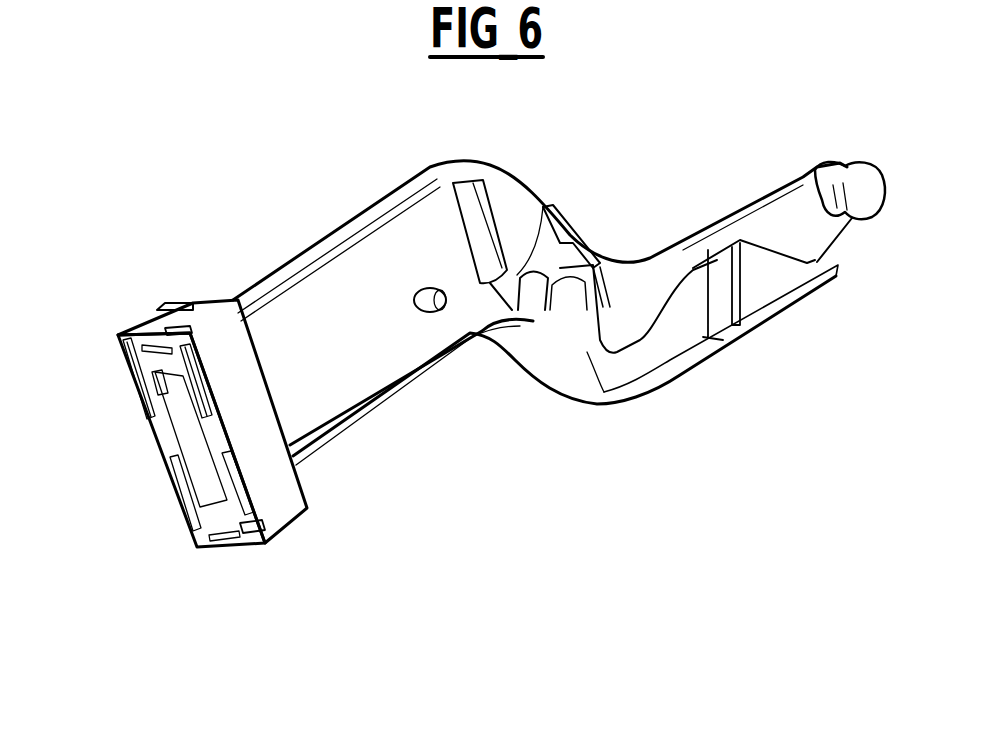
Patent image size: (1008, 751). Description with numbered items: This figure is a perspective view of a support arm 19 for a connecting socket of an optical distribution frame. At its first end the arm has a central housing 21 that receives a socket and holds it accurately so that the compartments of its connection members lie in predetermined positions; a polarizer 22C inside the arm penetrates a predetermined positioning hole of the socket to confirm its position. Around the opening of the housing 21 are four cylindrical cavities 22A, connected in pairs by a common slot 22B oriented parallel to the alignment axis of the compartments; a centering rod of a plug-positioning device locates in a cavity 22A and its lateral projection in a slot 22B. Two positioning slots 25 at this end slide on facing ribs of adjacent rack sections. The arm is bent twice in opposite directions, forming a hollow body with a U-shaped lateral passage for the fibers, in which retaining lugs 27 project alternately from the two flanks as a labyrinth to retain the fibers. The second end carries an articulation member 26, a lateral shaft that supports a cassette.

The support arm 19 is at (308, 190).
The central housing 21 is at (180, 507).
The cylindrical cavities 22A is at (160, 344).
The slot 22B is at (182, 390).
The polarizer 22C is at (421, 312).
The positioning slots 25 is at (170, 330).
The articulation member 26 is at (850, 220).
The retaining lugs 27 is at (630, 293).